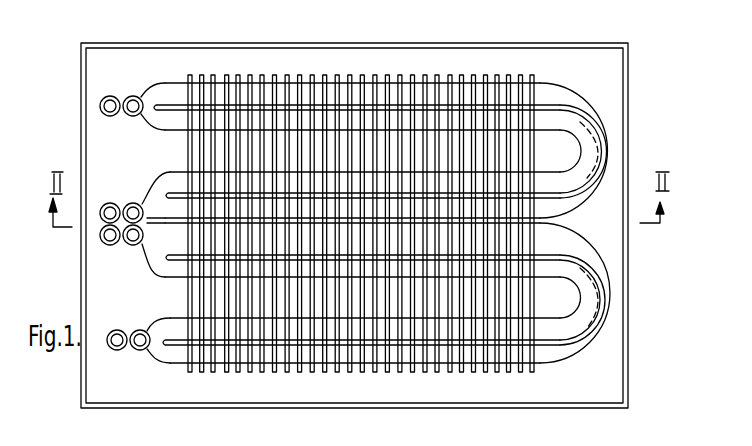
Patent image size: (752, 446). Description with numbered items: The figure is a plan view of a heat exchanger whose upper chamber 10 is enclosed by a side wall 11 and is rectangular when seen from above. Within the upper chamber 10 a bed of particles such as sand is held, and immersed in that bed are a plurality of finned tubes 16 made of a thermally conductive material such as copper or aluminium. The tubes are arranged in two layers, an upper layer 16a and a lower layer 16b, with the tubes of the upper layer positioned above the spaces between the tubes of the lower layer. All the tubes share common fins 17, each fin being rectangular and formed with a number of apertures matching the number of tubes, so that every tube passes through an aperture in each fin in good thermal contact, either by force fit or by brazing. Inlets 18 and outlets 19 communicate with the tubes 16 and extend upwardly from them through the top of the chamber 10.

The upper chamber 10 is at (595, 57).
The side wall 11 is at (483, 46).
The finned tubes 16 is at (578, 232).
The upper layer of tubes 16a is at (177, 205).
The lower layer of tubes 16b is at (168, 93).
The fins 17 is at (228, 74).
The inlets 18 is at (133, 203).
The outlets 19 is at (132, 95).